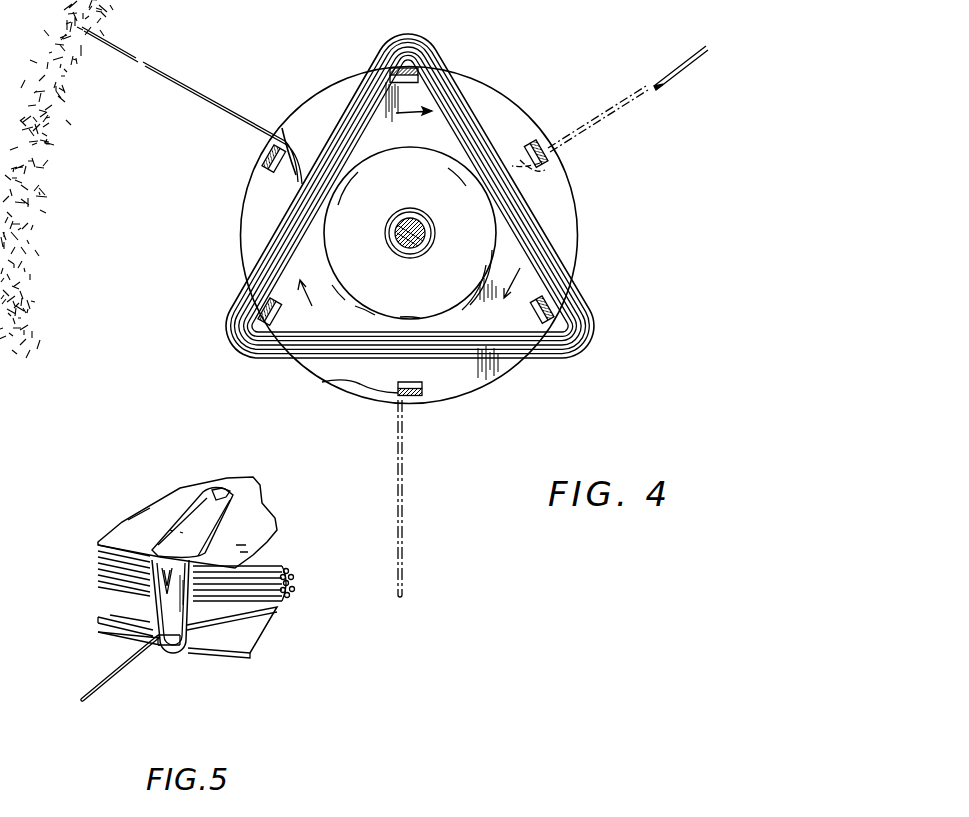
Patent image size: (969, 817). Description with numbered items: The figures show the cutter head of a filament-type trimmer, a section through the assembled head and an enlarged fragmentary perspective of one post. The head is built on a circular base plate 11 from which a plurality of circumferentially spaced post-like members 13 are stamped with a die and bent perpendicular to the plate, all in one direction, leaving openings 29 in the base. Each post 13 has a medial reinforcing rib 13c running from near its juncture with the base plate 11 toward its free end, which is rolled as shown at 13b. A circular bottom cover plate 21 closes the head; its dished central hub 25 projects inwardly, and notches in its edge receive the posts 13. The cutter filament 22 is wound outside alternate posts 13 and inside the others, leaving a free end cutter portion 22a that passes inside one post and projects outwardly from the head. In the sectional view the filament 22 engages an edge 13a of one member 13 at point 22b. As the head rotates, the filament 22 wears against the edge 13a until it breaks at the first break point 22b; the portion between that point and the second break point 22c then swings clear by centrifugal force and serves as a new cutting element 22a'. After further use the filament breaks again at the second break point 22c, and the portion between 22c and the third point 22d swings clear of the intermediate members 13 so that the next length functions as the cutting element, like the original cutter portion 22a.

In FIG. 5, the base plate 11 is at (138, 525).
In FIG. 4, the post-like members 13 is at (418, 72).
In FIG. 5, the post-like members 13 is at (166, 578).
In FIG. 5, the edge 13a is at (123, 643).
In FIG. 5, the rolled free end 13b is at (168, 648).
In FIG. 5, the medial reinforcing rib 13c is at (160, 574).
In FIG. 4, the cover plate 21 is at (504, 103).
In FIG. 5, the cover plate 21 is at (235, 660).
In FIG. 4, the filament 22 is at (590, 302).
In FIG. 5, the filament 22 is at (98, 570).
In FIG. 4, the cutter portion 22a is at (192, 103).
In FIG. 5, the cutter portion 22a is at (120, 687).
In FIG. 4, the cutting element 22a' is at (434, 498).
In FIG. 4, the first break point 22b is at (287, 145).
In FIG. 4, the second break point 22c is at (322, 382).
In FIG. 4, the third point 22d is at (564, 158).
In FIG. 4, the hub 25 is at (577, 242).
In FIG. 5, the openings 29 is at (203, 532).